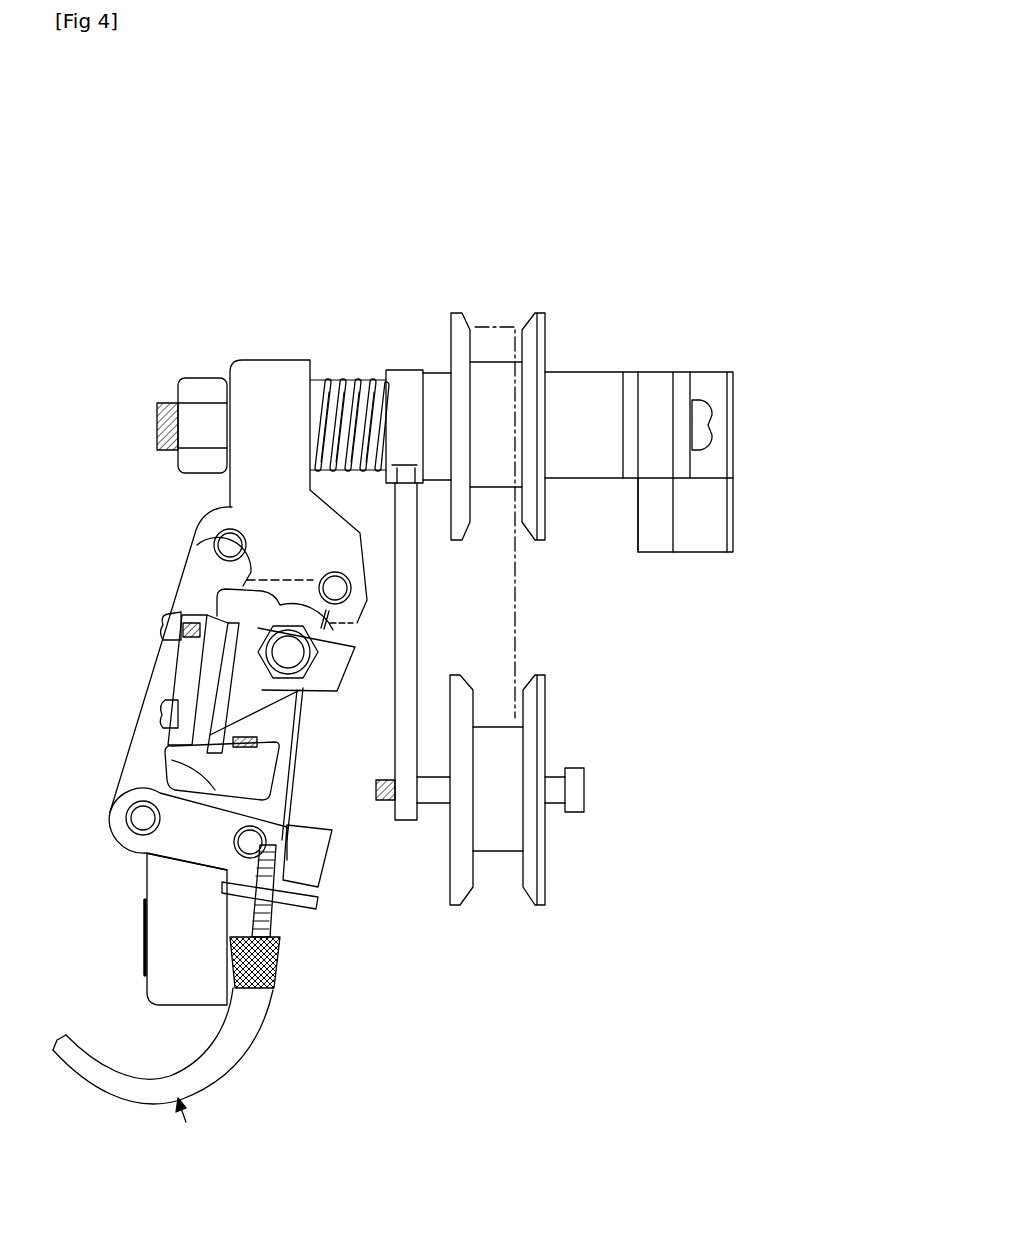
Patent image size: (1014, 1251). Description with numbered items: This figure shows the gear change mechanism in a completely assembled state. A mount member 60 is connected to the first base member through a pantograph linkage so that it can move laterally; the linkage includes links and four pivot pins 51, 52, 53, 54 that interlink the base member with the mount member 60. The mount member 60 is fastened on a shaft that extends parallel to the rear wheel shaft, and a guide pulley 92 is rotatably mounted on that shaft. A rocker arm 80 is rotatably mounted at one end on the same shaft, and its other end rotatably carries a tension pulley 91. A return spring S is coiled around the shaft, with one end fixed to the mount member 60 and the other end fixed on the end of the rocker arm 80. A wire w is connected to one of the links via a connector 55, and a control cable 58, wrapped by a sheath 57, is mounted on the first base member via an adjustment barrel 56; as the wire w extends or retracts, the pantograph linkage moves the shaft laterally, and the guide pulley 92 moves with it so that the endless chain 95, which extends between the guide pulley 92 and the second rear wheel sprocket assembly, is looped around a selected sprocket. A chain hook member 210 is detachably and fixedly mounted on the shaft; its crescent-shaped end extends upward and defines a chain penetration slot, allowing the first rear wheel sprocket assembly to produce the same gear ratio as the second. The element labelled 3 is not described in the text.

The mount member 60 is at (252, 378).
The return spring S is at (350, 372).
The rocker arm 80 is at (418, 612).
The guide pulley 92 is at (452, 310).
The endless chain 95 is at (518, 627).
The chain hook member 210 is at (647, 512).
The tension pulley 91 is at (545, 903).
The pivot pin 54 is at (190, 543).
The pivot pin 53 is at (175, 590).
The connector 55 is at (338, 692).
The wire w is at (293, 795).
The pivot pin 52 is at (128, 810).
The pivot pin 51 is at (232, 841).
The hanger block 3 is at (150, 973).
The adjustment barrel 56 is at (275, 975).
The sheath 57 is at (227, 1053).
The control cable 58 is at (186, 1124).